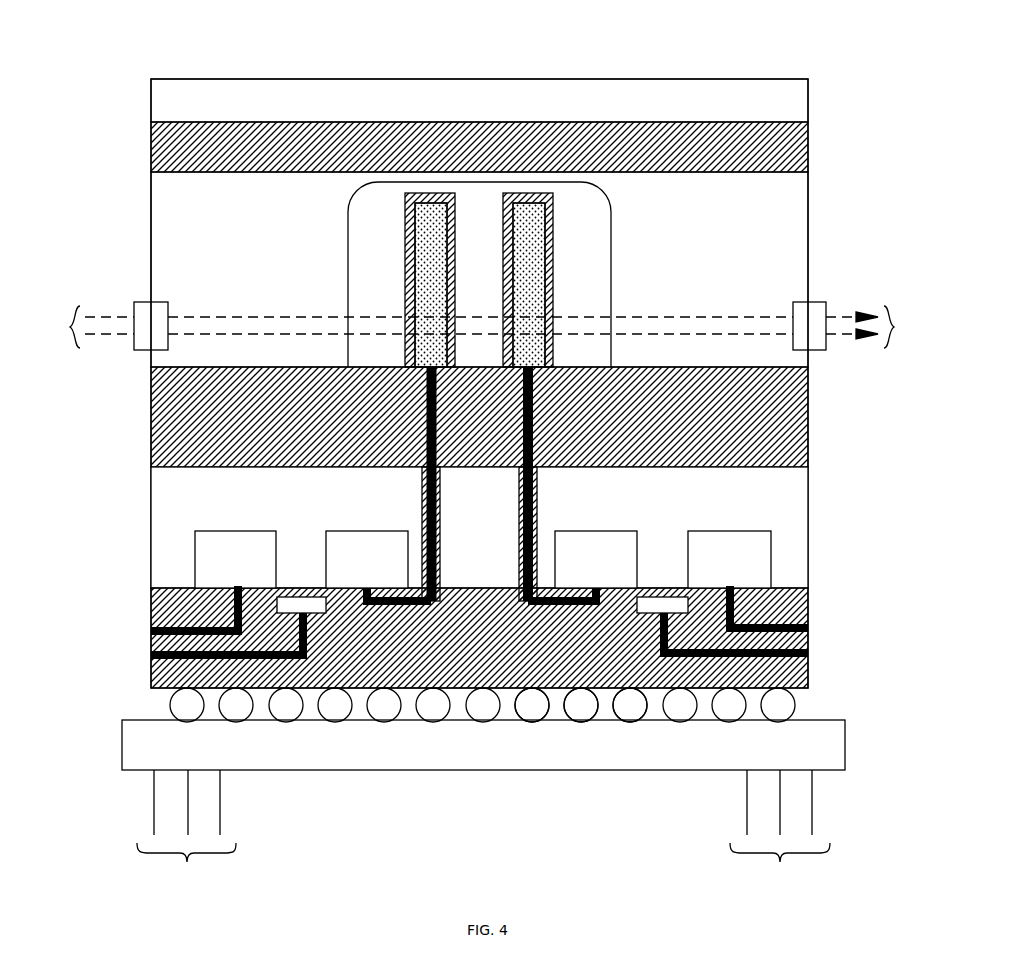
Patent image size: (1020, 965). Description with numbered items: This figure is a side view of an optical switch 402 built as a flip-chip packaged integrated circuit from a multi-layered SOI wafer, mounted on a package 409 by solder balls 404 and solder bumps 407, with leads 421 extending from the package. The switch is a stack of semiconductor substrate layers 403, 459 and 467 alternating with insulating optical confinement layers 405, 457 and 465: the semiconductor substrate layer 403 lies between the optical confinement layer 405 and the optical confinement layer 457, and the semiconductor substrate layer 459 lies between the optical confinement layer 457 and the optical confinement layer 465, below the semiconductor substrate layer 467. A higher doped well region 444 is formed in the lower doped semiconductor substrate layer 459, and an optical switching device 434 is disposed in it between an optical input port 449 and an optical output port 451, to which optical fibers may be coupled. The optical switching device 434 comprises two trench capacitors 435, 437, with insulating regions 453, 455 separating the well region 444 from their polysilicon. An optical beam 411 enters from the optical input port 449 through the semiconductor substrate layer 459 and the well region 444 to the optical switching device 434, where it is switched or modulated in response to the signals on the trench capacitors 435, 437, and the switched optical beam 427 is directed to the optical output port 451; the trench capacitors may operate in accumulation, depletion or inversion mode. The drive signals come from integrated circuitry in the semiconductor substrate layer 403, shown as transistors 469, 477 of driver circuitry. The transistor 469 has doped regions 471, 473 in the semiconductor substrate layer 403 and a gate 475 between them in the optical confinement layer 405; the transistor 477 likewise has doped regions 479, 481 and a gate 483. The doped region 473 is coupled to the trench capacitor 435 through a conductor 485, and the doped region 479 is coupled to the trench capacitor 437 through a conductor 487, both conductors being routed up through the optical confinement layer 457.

The optoelectronic device 402 is at (742, 79).
The semiconductor substrate layer 403 is at (808, 501).
The solder balls 404 is at (806, 692).
The optical confinement layer 405 is at (808, 610).
The solder bumps 407 is at (530, 712).
The package substrate 409 is at (845, 748).
The optical beam 411 is at (82, 327).
The package leads 421 is at (483, 829).
The switched optical beam 427 is at (548, 327).
The optical switching device 434 is at (570, 213).
The trench capacitor 435 is at (430, 300).
The trench capacitor 437 is at (530, 300).
The higher doped well region 444 is at (612, 280).
The optical input port 449 is at (149, 302).
The optical output port 451 is at (812, 302).
The insulating region 453 is at (450, 256).
The insulating region 455 is at (548, 256).
The optical confinement layer 457 is at (808, 410).
The semiconductor substrate layer 459 is at (800, 229).
The optical confinement layer 465 is at (800, 148).
The semiconductor substrate layer 467 is at (800, 103).
The transistor 469 is at (312, 524).
The doped region 471 is at (220, 531).
The doped region 473 is at (353, 531).
The gate 475 is at (307, 617).
The transistor 477 is at (674, 522).
The doped region 479 is at (590, 531).
The doped region 481 is at (722, 531).
The gate 483 is at (648, 617).
The conductor 485 is at (418, 414).
The conductor 487 is at (535, 405).